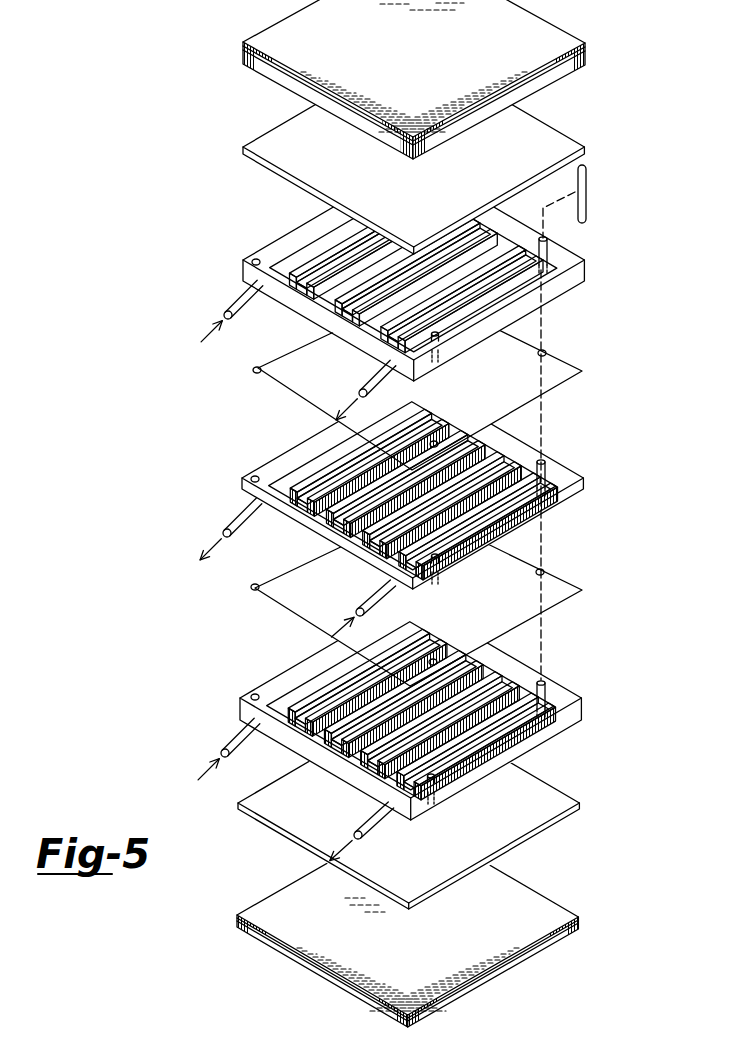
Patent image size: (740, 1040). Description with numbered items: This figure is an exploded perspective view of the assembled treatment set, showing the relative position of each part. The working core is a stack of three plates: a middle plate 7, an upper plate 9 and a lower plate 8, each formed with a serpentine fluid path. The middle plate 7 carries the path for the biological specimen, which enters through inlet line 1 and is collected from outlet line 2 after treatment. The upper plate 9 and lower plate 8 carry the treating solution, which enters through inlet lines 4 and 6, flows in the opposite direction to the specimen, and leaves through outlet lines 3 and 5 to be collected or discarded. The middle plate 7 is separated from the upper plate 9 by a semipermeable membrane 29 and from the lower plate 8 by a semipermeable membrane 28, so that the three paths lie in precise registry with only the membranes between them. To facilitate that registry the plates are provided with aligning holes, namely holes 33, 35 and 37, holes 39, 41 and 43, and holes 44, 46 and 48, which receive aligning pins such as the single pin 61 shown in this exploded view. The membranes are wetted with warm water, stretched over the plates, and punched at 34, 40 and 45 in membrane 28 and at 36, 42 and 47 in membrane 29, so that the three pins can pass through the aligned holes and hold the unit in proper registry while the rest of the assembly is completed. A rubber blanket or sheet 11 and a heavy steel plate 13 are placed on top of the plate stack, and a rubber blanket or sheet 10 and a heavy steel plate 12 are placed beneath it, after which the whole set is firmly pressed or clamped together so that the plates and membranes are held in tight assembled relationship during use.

The heavy steel plate 13 is at (586, 50).
The rubber blanket 11 is at (586, 150).
The upper plate 9 is at (586, 270).
The semipermeable membrane 29 is at (585, 371).
The middle plate 7 is at (584, 482).
The semipermeable membrane 28 is at (585, 590).
The lower plate 8 is at (582, 710).
The rubber blanket 10 is at (582, 806).
The heavy steel plate 12 is at (582, 917).
The aligning pin 61 is at (588, 190).
The aligning hole 37 is at (548, 240).
The aligning hole 35 is at (546, 462).
The aligning hole 33 is at (546, 683).
The membrane hole 36 is at (547, 352).
The membrane hole 34 is at (545, 571).
The aligning hole 48 is at (251, 262).
The membrane hole 47 is at (252, 370).
The aligning hole 46 is at (250, 479).
The membrane hole 45 is at (250, 588).
The aligning hole 44 is at (250, 697).
The membrane hole 42 is at (440, 444).
The membrane hole 40 is at (439, 662).
The aligning hole 43 is at (440, 338).
The aligning hole 41 is at (440, 559).
The aligning hole 39 is at (436, 779).
The inlet line 4 is at (233, 306).
The outlet line 3 is at (376, 390).
The outlet line 2 is at (232, 524).
The inlet line 1 is at (371, 608).
The inlet line 6 is at (230, 744).
The outlet line 5 is at (370, 831).